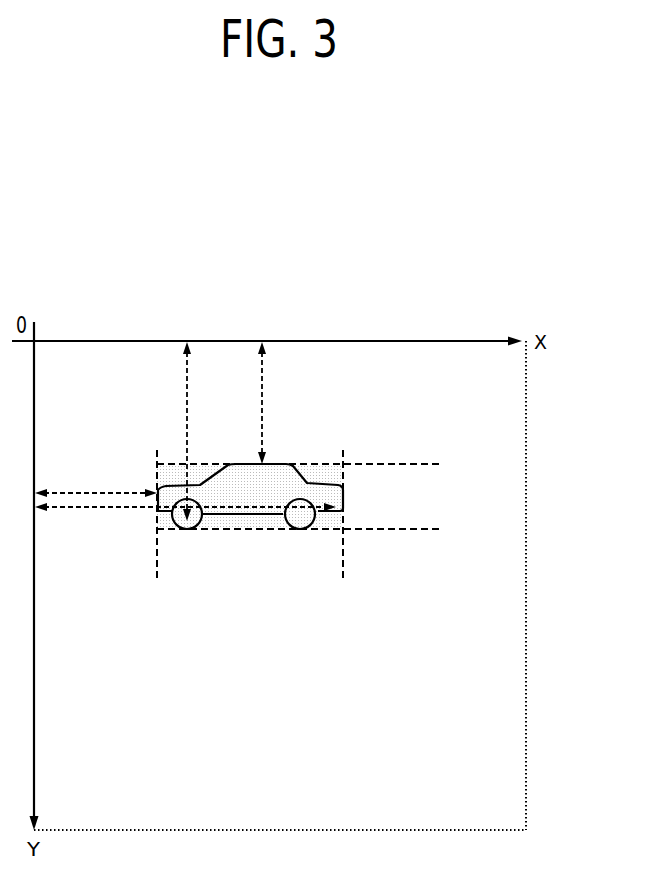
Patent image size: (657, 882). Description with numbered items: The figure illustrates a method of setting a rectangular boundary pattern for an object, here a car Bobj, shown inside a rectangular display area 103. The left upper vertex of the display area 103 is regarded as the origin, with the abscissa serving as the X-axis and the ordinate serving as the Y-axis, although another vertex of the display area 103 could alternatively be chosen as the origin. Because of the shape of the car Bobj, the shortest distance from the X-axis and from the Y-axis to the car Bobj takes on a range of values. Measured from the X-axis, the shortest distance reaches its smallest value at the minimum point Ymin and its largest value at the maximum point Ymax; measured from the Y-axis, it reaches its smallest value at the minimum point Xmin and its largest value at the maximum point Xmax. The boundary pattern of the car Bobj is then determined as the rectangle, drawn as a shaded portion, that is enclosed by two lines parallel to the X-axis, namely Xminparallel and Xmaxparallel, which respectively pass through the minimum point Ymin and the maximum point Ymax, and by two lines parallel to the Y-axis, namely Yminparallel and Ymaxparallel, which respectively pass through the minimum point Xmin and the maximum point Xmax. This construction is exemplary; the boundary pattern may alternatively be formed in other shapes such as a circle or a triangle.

The display area 103 is at (526, 585).
The object (car) Bobj is at (343, 493).
The line parallel to the X-axis through the minimum point Xminparallel is at (361, 459).
The line parallel to the X-axis through the maximum point Xmaxparallel is at (362, 531).
The line parallel to the Y-axis through the minimum point Yminparallel is at (164, 528).
The line parallel to the Y-axis through the maximum point Ymaxparallel is at (387, 528).
The maximum point from the X-axis Ymax is at (168, 431).
The minimum point from the X-axis Ymin is at (279, 403).
The minimum point from the Y-axis Xmin is at (96, 483).
The maximum point from the Y-axis Xmax is at (185, 520).